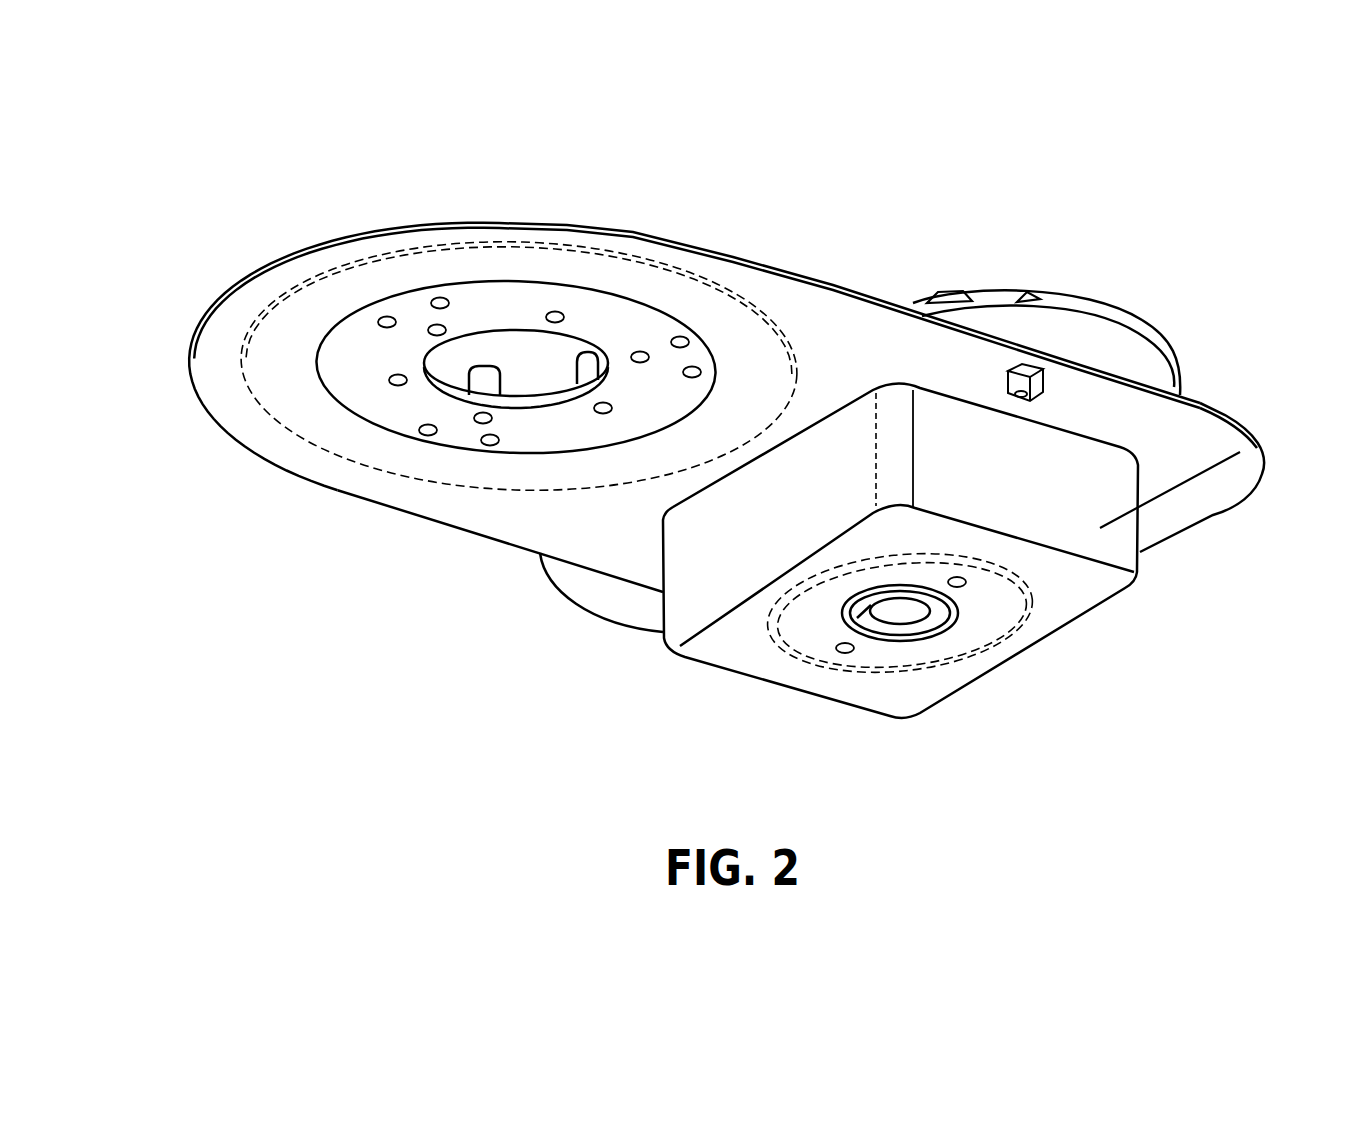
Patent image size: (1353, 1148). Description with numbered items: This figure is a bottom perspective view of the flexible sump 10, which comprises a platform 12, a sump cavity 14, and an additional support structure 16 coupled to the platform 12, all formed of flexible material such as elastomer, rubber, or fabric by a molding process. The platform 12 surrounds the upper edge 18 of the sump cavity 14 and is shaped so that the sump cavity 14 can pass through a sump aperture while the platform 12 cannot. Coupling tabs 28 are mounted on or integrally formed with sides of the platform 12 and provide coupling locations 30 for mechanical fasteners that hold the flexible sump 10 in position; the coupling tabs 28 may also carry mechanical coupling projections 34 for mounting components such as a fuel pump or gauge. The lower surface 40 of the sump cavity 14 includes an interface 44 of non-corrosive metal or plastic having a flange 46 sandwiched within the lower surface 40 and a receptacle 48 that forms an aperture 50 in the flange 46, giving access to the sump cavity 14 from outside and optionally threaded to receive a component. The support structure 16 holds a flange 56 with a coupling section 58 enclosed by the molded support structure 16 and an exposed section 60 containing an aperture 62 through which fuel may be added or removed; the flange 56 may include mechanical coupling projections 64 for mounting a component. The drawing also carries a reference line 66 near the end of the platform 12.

The flexible sump 10 is at (1212, 148).
The platform 12 is at (813, 297).
The sump cavity 14 is at (1110, 580).
The support structure 16 is at (340, 478).
The upper edge 18 is at (1115, 441).
The coupling tabs 28 is at (1117, 320).
The coupling locations 30 is at (1033, 377).
The mechanical coupling projections 34 is at (1023, 293).
The lower surface 40 is at (867, 693).
The interface 44 is at (800, 643).
The flange 46 is at (957, 587).
The receptacle 48 is at (942, 632).
The aperture 50 is at (908, 633).
The flange 56 is at (288, 364).
The coupling section 58 is at (400, 272).
The exposed section 60 is at (603, 318).
The aperture 62 is at (520, 385).
The mechanical coupling projections 64 is at (482, 367).
The axis 66 is at (843, 465).